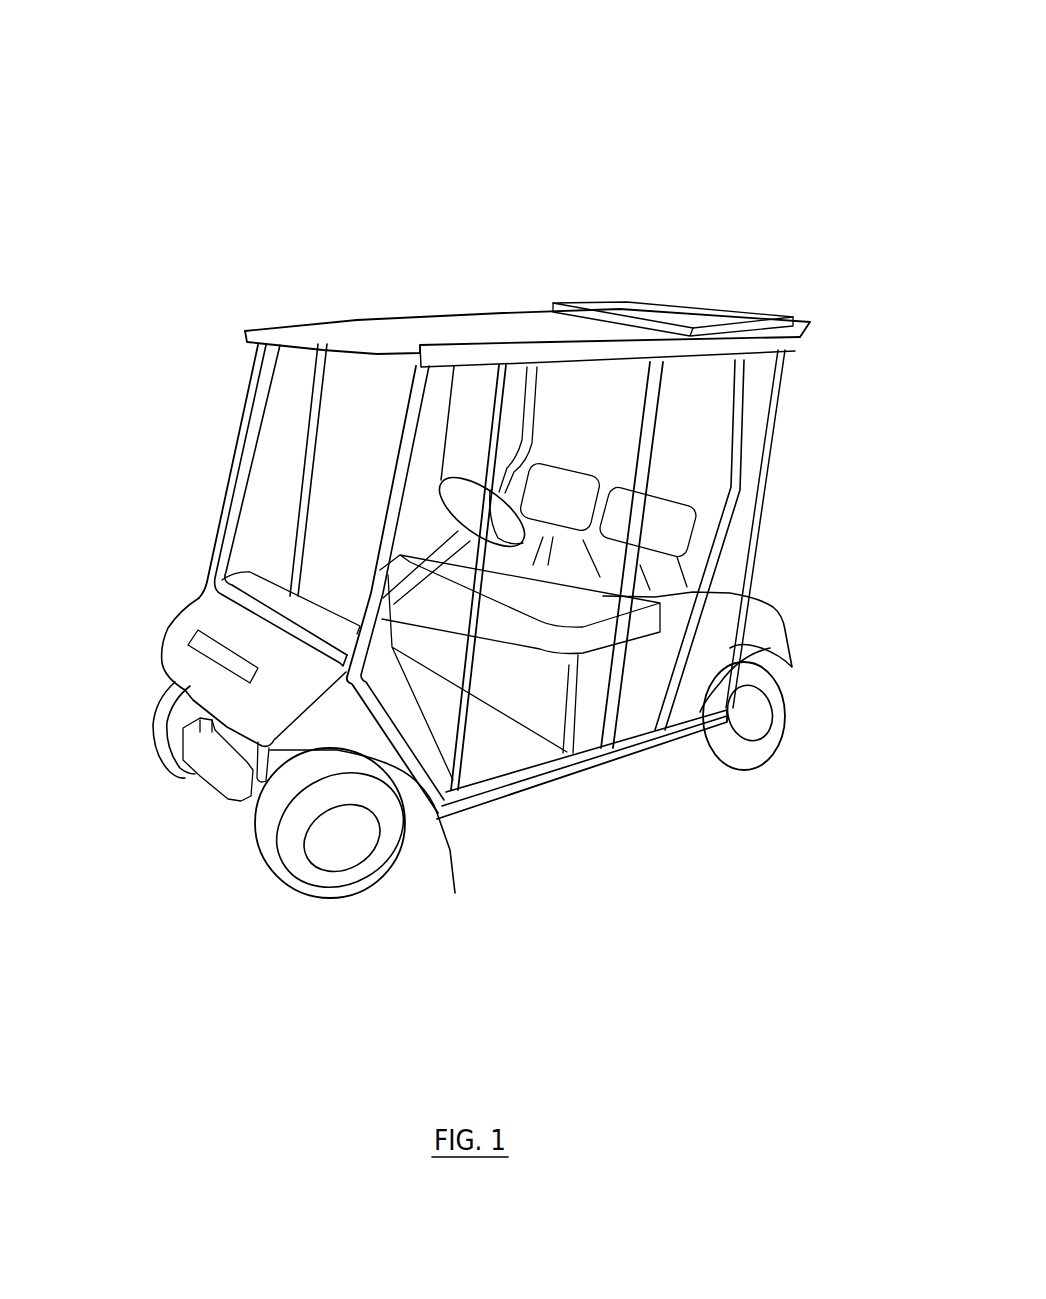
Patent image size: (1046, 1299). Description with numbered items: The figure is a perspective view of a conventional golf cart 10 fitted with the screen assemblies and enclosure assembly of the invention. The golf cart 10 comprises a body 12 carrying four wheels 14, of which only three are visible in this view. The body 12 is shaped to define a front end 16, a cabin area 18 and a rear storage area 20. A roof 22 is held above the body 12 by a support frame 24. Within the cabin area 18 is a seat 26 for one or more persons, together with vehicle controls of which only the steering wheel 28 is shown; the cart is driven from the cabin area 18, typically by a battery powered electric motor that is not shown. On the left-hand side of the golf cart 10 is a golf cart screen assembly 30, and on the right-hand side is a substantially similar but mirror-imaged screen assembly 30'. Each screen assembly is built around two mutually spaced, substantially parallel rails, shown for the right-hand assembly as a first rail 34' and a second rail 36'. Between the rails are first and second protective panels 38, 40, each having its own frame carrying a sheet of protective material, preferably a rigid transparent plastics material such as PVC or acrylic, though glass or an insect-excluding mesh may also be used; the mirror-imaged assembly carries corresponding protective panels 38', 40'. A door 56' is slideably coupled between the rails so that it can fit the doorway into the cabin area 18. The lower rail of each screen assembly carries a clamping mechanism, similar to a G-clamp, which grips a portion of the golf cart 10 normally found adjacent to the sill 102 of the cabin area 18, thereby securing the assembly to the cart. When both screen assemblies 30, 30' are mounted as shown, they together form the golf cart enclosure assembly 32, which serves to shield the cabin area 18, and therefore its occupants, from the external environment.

The golf cart 10 is at (684, 146).
The body 12 is at (164, 619).
The wheels 14 is at (260, 840).
The front end 16 is at (170, 650).
The cabin area 18 is at (503, 743).
The rear storage area 20 is at (726, 567).
The roof 22 is at (353, 332).
The support frame 24 is at (222, 556).
The seat 26 is at (553, 610).
The steering wheel 28 is at (467, 502).
The golf cart screen assembly 30 is at (205, 500).
The golf cart enclosure assembly 32 is at (240, 402).
The center post 34' is at (485, 400).
The lower frame member 36' is at (577, 865).
The first protective panel 38 is at (718, 430).
The rear post 38' is at (799, 545).
The second protective panel 40 is at (161, 468).
The door frame post 40' is at (264, 597).
The rear frame member 56' is at (834, 529).
The golf cart screen assembly 30' is at (584, 868).
The sill 102 is at (563, 760).